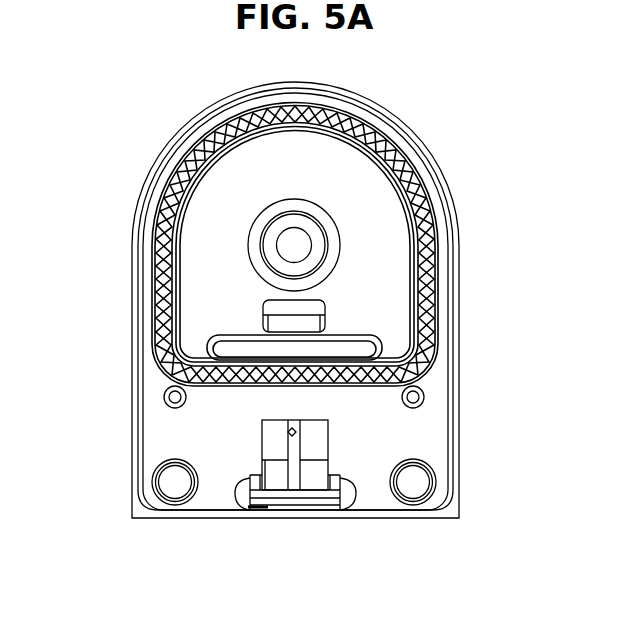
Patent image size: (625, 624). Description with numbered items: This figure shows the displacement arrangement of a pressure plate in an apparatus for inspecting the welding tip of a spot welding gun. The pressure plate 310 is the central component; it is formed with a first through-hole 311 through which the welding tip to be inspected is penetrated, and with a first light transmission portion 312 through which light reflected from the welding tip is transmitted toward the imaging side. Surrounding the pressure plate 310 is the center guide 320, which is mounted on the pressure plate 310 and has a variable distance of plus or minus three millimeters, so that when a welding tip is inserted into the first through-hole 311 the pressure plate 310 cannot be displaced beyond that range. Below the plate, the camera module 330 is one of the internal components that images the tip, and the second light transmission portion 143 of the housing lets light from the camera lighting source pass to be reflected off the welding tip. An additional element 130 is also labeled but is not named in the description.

The housing 130 is at (423, 427).
The pressure plate 310 is at (378, 190).
The first through-hole 311 is at (293, 244).
The first light transmission portion 312 is at (293, 323).
The center guide 320 is at (424, 283).
The camera module 330 is at (312, 477).
The second light transmission portion 143 is at (236, 499).